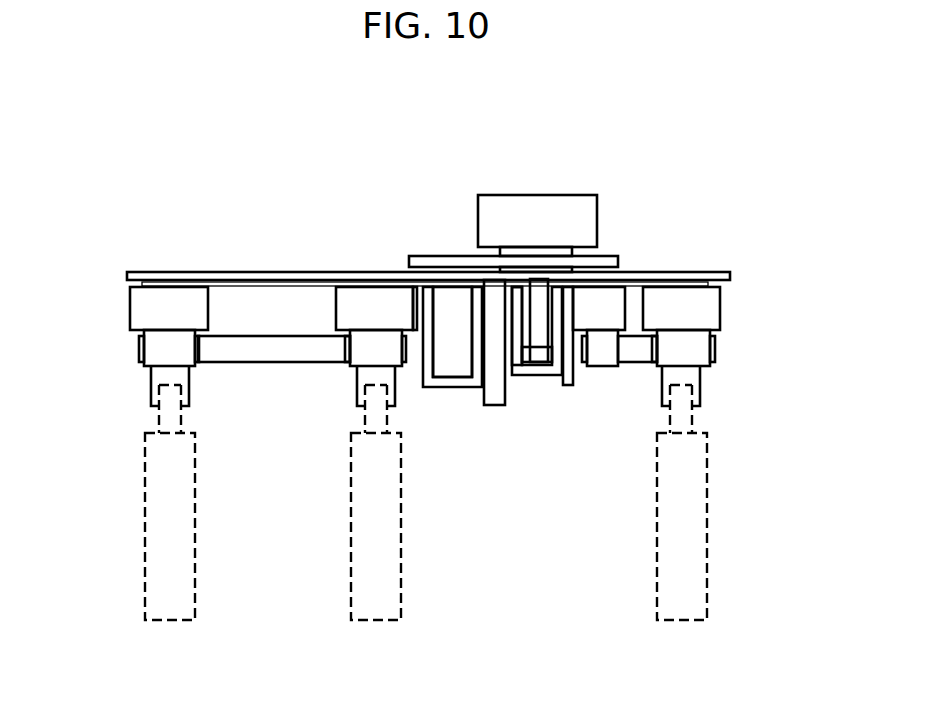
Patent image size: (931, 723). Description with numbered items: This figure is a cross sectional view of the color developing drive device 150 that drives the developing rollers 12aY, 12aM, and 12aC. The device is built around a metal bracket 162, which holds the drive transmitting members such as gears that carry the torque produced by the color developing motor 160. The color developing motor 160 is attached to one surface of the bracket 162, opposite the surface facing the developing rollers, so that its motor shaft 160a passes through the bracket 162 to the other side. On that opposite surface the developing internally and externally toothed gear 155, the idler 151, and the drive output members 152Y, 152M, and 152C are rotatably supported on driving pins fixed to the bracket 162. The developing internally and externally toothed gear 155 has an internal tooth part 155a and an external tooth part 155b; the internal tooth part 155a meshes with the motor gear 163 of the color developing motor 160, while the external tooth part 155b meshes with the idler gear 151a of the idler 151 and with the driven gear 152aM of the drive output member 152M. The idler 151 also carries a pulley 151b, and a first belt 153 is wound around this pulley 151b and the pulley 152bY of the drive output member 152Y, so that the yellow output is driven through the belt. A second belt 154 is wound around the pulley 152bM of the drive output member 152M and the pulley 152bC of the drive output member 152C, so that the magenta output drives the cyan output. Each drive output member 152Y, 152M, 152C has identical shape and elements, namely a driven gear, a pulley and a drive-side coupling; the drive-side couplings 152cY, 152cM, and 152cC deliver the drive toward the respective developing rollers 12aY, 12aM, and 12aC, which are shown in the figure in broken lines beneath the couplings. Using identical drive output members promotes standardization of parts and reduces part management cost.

The color developing drive device 150 is at (312, 169).
The color developing motor 160 is at (568, 194).
The motor shaft 160a is at (523, 313).
The idler 151 is at (712, 222).
The idler gear 151a is at (618, 292).
The pulley 151b is at (610, 350).
The bracket 162 is at (721, 272).
The first belt 153 is at (632, 364).
The second belt 154 is at (252, 336).
The developing internally and externally toothed gear 155 is at (600, 488).
The internal tooth part 155a is at (458, 367).
The external tooth part 155b is at (432, 367).
The motor gear 163 is at (553, 367).
The drive output member 152C is at (62, 340).
The pulley 152bC is at (150, 357).
The drive-side coupling 152cC is at (152, 385).
The drive output member 152M is at (258, 383).
The driven gear 152aM is at (338, 323).
The pulley 152bM is at (347, 358).
The drive-side coupling 152cM is at (357, 385).
The drive output member 152Y is at (790, 332).
The pulley 152bY is at (698, 345).
The drive-side coupling 152cY is at (698, 375).
The developing roller 12aC is at (196, 527).
The developing roller 12aM is at (402, 527).
The developing roller 12aY is at (708, 527).